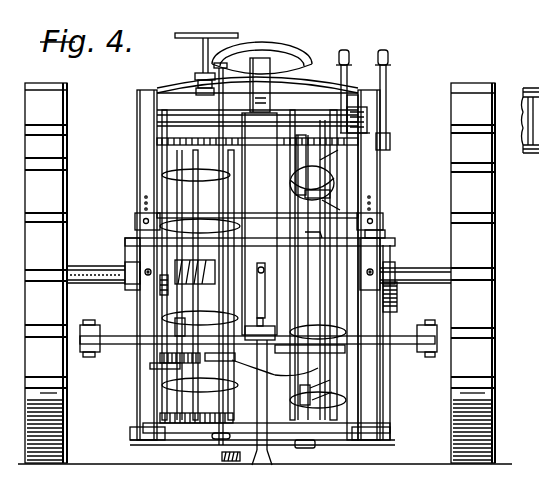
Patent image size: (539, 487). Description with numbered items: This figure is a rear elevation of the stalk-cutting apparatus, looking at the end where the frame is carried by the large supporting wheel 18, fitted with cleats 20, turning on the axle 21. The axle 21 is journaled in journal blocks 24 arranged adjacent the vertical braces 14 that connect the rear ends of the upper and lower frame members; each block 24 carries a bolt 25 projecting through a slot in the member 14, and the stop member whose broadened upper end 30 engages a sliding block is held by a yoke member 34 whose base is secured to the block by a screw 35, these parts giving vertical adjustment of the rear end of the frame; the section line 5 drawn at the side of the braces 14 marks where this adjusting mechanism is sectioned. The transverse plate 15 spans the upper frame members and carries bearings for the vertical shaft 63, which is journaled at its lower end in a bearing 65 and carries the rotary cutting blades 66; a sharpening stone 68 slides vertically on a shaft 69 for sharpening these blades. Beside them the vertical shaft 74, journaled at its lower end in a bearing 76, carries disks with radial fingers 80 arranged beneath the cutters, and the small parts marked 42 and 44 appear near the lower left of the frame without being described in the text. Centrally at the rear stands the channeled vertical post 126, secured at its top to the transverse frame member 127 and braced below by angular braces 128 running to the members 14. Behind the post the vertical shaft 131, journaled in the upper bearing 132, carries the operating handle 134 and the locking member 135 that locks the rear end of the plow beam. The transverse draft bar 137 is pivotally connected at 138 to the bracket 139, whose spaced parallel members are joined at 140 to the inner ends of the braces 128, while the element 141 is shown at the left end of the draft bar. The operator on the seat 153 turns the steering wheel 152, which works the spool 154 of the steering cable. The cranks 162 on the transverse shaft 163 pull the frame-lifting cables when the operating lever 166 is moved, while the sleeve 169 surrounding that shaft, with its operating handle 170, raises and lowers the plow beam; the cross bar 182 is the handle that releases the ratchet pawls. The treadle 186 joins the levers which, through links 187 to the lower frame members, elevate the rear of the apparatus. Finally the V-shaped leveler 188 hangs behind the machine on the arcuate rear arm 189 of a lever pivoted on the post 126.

The section line 5 is at (140, 193).
The vertical brace 14 is at (150, 312).
The transverse plate 15 is at (187, 132).
The wheel 18 is at (55, 117).
The cleats 20 is at (50, 160).
The axle 21 is at (438, 268).
The journal block 24 is at (122, 276).
The bolt 25 is at (125, 268).
The broadened upper end 30 is at (123, 246).
The yoke member 34 is at (140, 218).
The screw 35 is at (144, 221).
The rack bar 42 is at (164, 296).
The spring pack 44 is at (186, 280).
The vertical shaft 63 is at (230, 190).
The bearing 65 is at (192, 438).
The rotary cutting blades 66 is at (196, 170).
The sharpening stone 68 is at (195, 240).
The shaft 69 is at (200, 317).
The vertical shaft 74 is at (300, 150).
The bearing 76 is at (305, 448).
The radial fingers 80 is at (322, 236).
The vertical post 126 is at (254, 290).
The transverse frame member 127 is at (166, 93).
The braces 128 is at (158, 358).
The vertical shaft 131 is at (243, 254).
The upper bearing 132 is at (262, 54).
The operating handle 134 is at (311, 62).
The locking member 135 is at (322, 402).
The transverse draft bar 137 is at (425, 325).
The pivotal connection 138 is at (259, 382).
The bracket 139 is at (290, 378).
The connection 140 is at (240, 430).
The left shaft end block 141 is at (86, 358).
The steering wheel 152 is at (232, 22).
The seat 153 is at (260, 40).
The spool 154 is at (200, 76).
The crank 162 is at (367, 122).
The transverse shaft 163 is at (178, 150).
The operating lever 166 is at (390, 50).
The sleeve 169 is at (328, 168).
The operating handle 170 is at (350, 48).
The cross bar 182 is at (165, 100).
The treadle 186 is at (392, 240).
The links 187 is at (392, 368).
The leveler 188 is at (232, 462).
The rear arm 189 is at (262, 372).